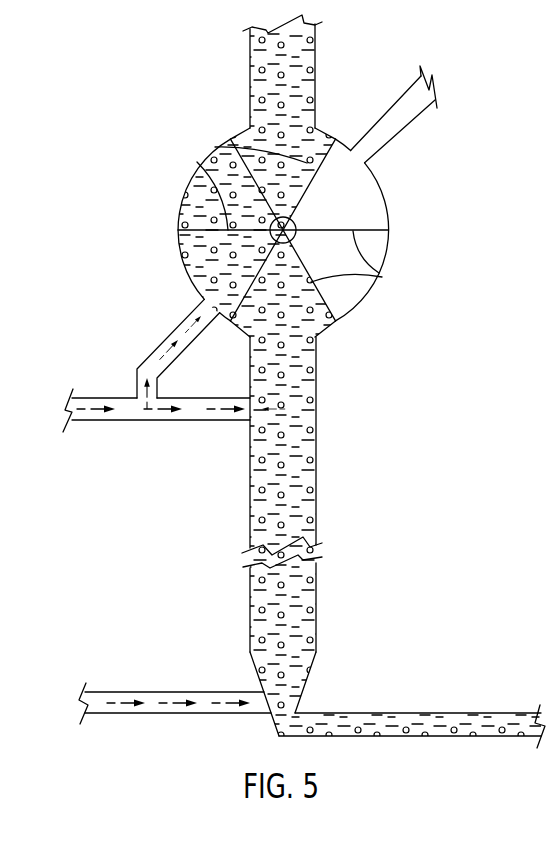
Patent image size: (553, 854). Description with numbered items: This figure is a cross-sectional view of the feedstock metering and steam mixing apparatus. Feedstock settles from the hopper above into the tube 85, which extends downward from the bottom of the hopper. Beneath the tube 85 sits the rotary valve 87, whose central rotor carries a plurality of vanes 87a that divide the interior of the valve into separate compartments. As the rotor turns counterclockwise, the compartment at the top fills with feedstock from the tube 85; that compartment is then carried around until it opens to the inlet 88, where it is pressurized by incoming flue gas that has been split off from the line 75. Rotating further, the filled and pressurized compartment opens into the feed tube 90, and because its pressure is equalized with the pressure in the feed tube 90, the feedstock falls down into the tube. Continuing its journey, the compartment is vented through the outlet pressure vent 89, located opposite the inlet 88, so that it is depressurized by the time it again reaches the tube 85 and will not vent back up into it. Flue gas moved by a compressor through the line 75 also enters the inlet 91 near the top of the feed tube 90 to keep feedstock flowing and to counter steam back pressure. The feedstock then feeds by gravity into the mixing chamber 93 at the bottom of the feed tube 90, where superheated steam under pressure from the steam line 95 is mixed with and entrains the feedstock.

The line 75 is at (113, 397).
The tube 85 is at (315, 78).
The rotary valve 87 is at (387, 203).
The vanes 87a is at (215, 147).
The inlet 88 is at (178, 329).
The outlet pressure vent 89 is at (408, 121).
The feed tube 90 is at (316, 445).
The inlet 91 is at (281, 409).
The mixing chamber 93 is at (305, 678).
The steam line 95 is at (205, 692).